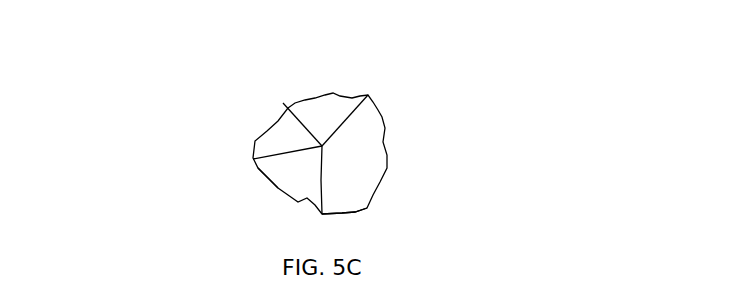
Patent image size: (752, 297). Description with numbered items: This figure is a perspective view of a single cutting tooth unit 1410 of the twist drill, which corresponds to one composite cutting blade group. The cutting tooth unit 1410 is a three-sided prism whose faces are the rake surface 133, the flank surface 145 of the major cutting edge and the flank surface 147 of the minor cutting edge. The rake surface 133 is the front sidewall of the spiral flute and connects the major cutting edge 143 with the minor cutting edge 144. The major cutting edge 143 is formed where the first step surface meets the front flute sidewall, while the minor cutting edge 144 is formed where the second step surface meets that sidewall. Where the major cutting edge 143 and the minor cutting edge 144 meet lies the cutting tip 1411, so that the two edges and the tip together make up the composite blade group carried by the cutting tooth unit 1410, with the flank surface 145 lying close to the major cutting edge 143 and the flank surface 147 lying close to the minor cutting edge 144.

The cutting tooth unit 1410 is at (315, 39).
The cutting tip 1411 is at (283, 103).
The major cutting edge 143 is at (420, 77).
The flank surface of the major cutting edge 145 is at (300, 133).
The flank surface of the minor cutting edge 147 is at (293, 168).
The minor cutting edge 144 is at (315, 188).
The rake surface 133 is at (348, 157).